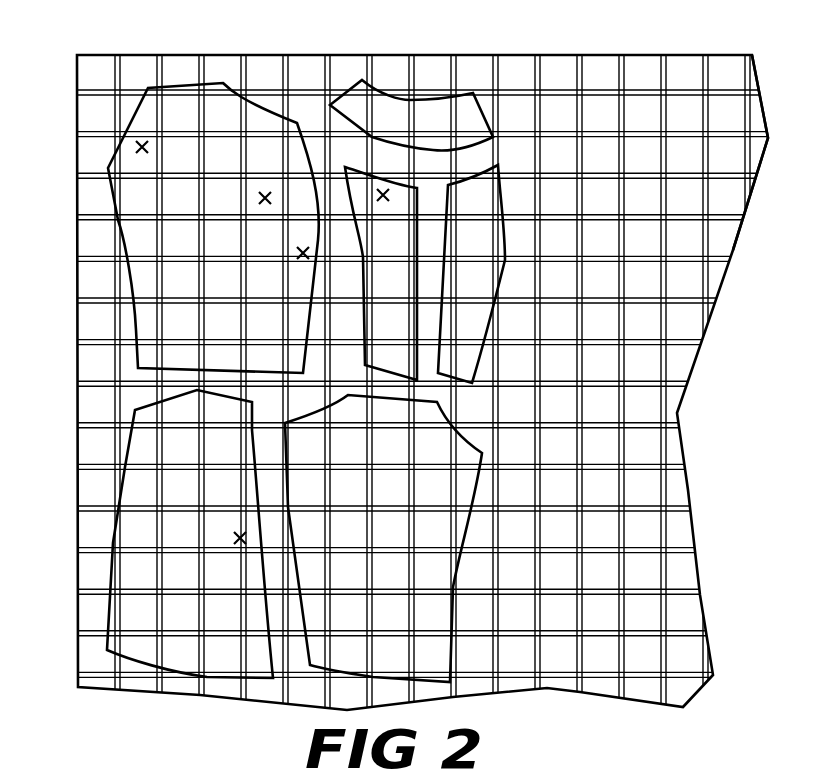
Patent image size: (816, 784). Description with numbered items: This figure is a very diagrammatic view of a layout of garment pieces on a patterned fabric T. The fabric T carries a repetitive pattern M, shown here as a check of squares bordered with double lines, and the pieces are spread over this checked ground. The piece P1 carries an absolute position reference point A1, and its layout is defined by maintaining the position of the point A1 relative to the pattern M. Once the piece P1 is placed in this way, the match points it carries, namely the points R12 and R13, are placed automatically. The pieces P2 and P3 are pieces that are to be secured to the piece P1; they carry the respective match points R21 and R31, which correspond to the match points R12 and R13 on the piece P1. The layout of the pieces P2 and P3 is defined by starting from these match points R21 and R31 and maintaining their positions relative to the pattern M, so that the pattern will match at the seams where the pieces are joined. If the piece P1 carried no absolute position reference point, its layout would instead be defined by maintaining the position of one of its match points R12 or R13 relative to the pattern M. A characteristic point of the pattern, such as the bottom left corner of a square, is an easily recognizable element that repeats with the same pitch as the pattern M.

The repetitive pattern M is at (668, 345).
The fabric T is at (766, 100).
The piece P1 is at (132, 278).
The piece P2 is at (103, 615).
The piece P3 is at (353, 203).
The absolute position reference point A1 is at (267, 190).
The match point R12 is at (303, 259).
The match point R13 is at (145, 140).
The match point R21 is at (234, 538).
The match point R31 is at (383, 188).